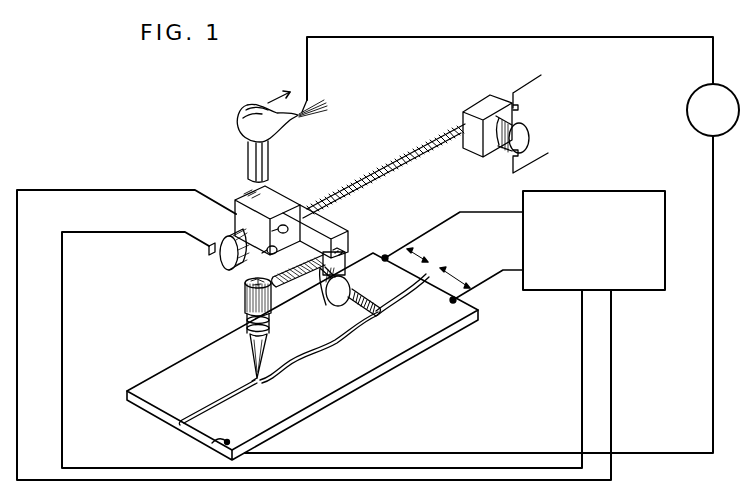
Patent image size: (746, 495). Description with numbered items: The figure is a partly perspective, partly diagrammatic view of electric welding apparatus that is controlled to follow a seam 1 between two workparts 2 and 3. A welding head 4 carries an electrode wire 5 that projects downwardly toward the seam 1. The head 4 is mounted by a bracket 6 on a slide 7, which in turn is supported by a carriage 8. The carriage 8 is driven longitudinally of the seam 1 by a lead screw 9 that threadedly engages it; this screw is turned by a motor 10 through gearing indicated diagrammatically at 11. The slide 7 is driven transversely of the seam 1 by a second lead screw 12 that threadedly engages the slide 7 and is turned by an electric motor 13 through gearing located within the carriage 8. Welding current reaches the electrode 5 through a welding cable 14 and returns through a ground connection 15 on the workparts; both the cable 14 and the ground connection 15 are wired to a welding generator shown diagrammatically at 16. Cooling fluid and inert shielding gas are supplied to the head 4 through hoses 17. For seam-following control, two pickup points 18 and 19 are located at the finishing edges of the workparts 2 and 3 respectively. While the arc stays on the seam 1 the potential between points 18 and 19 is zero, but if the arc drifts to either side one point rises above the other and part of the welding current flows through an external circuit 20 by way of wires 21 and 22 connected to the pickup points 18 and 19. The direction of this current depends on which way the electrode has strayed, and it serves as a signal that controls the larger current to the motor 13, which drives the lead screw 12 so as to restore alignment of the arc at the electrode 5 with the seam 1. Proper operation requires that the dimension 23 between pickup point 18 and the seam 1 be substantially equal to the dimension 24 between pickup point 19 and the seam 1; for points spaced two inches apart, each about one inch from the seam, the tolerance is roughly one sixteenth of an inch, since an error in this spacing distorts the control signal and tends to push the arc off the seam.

The seam 1 is at (376, 311).
The workpart 2 is at (186, 390).
The workpart 3 is at (268, 401).
The welding head 4 is at (248, 345).
The electrode wire 5 is at (253, 378).
The bracket 6 is at (280, 291).
The slide 7 is at (286, 257).
The carriage 8 is at (329, 239).
The lead screw 9 is at (356, 183).
The motor 10 is at (522, 133).
The gearing 11 is at (480, 99).
The lead screw 12 is at (351, 291).
The electric motor 13 is at (221, 256).
The welding cable 14 is at (309, 61).
The ground connection 15 is at (212, 443).
The welding generator 16 is at (694, 88).
The hoses 17 is at (326, 86).
The pickup point 18 is at (385, 257).
The pickup point 19 is at (453, 301).
The external circuit 20 is at (628, 191).
The wire 21 is at (457, 216).
The wire 22 is at (503, 270).
The dimension 23 is at (422, 259).
The dimension 24 is at (446, 269).